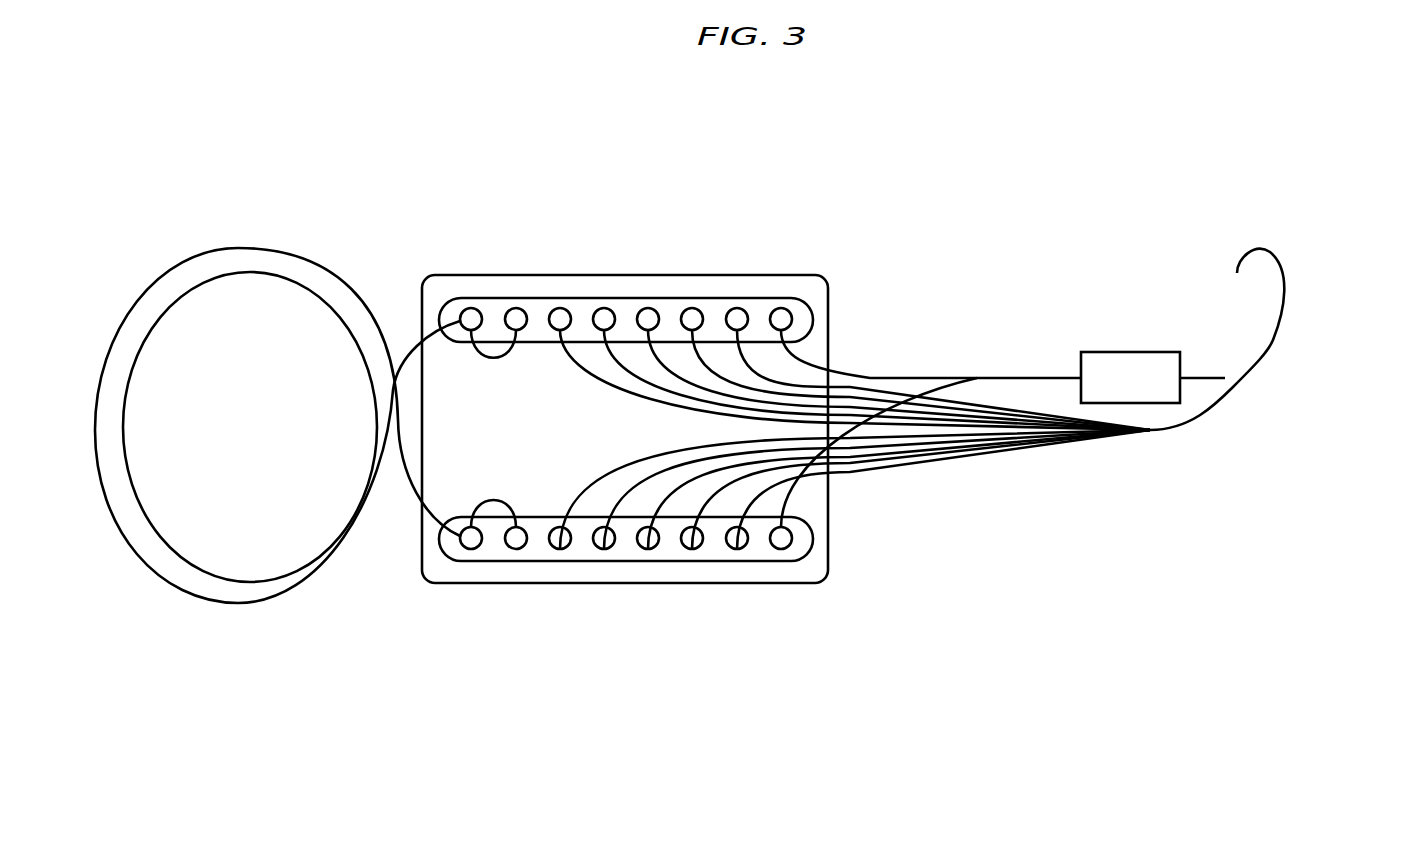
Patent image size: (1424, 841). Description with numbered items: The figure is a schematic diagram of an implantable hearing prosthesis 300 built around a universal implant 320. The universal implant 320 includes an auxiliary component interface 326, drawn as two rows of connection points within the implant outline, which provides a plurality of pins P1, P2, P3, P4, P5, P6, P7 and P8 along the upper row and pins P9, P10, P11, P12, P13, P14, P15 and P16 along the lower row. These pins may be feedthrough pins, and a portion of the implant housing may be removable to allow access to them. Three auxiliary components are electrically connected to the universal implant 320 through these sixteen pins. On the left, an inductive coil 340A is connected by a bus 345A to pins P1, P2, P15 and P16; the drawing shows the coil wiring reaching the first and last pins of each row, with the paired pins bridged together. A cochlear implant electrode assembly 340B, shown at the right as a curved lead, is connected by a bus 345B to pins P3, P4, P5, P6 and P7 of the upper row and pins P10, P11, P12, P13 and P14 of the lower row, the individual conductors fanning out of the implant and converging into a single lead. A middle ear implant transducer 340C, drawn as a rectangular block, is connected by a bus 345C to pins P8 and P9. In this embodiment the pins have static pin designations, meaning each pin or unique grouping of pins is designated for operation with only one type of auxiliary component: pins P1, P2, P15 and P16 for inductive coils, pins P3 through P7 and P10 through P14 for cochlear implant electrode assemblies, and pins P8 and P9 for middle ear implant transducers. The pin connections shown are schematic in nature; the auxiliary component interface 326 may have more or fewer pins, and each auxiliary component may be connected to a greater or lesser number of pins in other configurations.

The implantable hearing prosthesis 300 is at (983, 133).
The universal implant 320 is at (830, 348).
The auxiliary component interface 326 is at (626, 431).
The inductive coil 340A is at (187, 262).
The cochlear implant electrode assembly 340B is at (1273, 352).
The middle ear implant transducer 340C is at (1147, 352).
The bus 345A is at (372, 600).
The bus 345B is at (958, 452).
The bus 345C is at (995, 378).
The pin P1 is at (467, 308).
The pin P2 is at (512, 308).
The pin P3 is at (556, 308).
The pin P4 is at (600, 308).
The pin P5 is at (644, 308).
The pin P6 is at (688, 308).
The pin P7 is at (733, 308).
The pin P8 is at (777, 308).
The pin P9 is at (777, 549).
The pin P10 is at (733, 549).
The pin P11 is at (688, 549).
The pin P12 is at (644, 549).
The pin P13 is at (600, 549).
The pin P14 is at (556, 549).
The pin P15 is at (512, 549).
The pin P16 is at (467, 549).